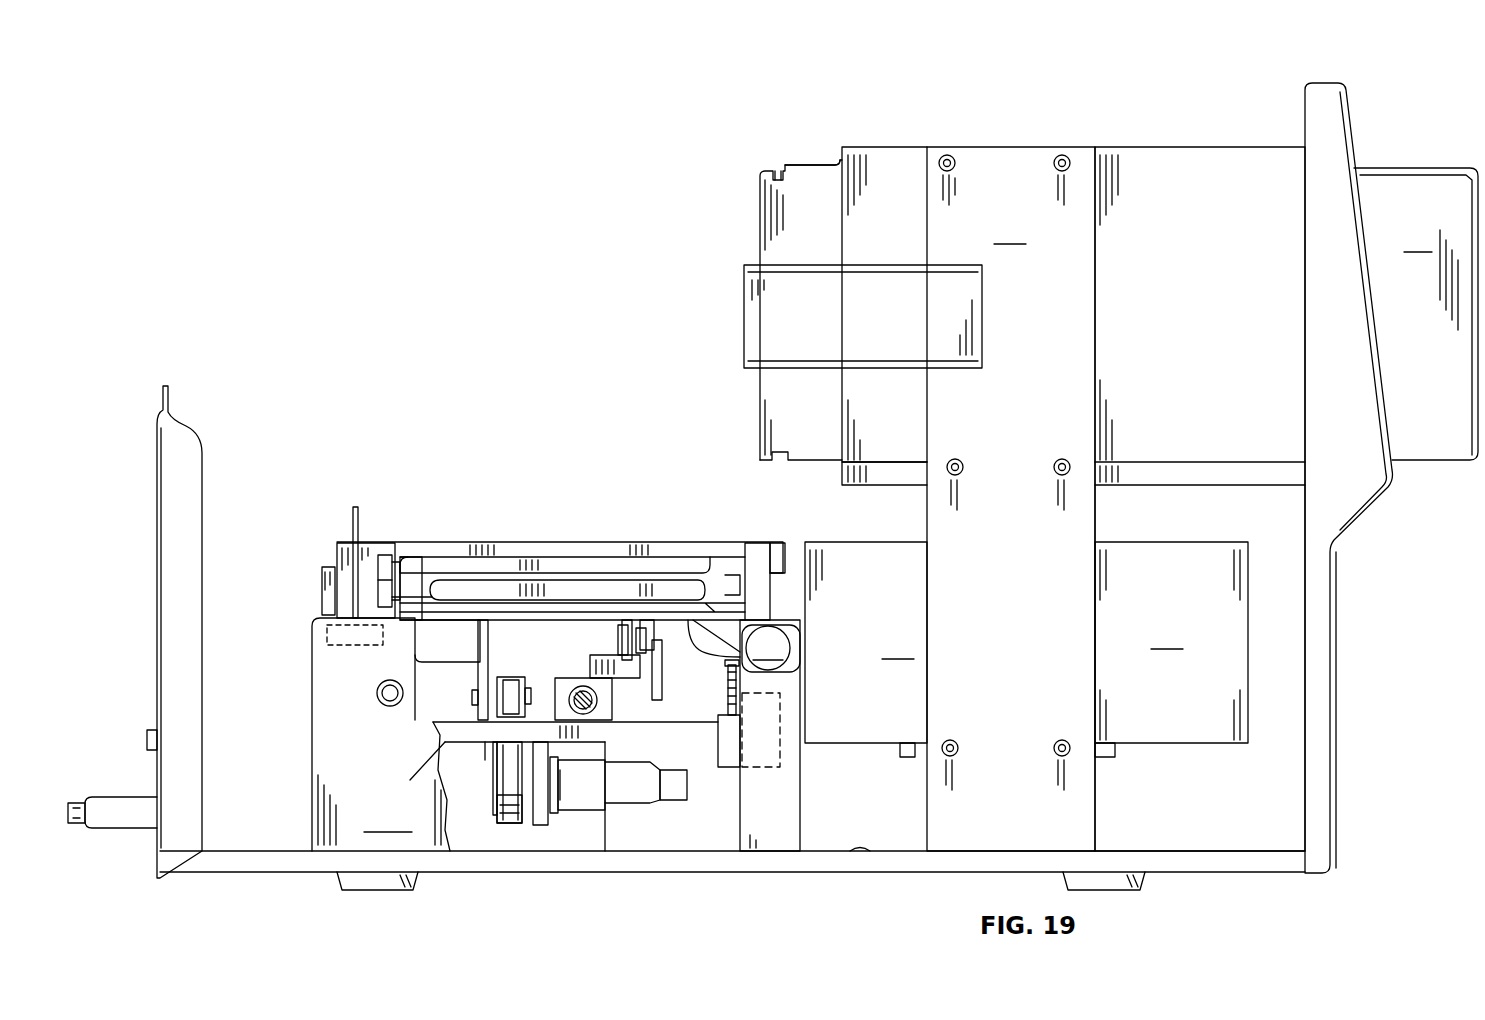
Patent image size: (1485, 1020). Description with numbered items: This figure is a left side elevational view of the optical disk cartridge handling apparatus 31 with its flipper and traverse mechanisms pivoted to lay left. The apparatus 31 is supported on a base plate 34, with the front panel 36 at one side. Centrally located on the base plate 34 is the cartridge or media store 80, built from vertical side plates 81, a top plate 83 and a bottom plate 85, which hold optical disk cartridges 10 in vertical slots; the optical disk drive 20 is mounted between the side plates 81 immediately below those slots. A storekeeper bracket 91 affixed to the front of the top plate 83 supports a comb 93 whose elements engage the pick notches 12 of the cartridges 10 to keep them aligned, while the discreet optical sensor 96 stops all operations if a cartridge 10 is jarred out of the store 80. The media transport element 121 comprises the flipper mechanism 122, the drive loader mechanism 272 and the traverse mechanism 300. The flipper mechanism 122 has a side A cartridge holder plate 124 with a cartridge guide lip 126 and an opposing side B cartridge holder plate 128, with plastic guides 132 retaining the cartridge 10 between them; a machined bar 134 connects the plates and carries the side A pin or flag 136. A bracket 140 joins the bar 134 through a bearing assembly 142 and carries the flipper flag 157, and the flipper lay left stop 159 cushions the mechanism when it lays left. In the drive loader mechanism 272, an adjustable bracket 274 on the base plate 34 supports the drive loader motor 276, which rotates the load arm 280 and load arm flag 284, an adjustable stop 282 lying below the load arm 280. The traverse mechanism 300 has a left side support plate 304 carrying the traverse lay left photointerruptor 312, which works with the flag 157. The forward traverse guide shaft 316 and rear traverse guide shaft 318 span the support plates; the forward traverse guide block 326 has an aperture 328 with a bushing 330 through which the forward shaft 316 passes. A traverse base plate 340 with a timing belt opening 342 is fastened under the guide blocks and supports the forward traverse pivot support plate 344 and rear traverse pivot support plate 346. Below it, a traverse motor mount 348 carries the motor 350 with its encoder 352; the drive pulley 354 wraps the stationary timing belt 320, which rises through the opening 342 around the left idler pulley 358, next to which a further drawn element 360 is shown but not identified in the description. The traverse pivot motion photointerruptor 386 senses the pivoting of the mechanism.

The optical disk cartridge 10 is at (770, 560).
The pick notch 12 is at (779, 168).
The optical disk drive 20 is at (1026, 649).
The optical disk cartridge handling apparatus 31 is at (1178, 133).
The base plate 34 is at (866, 851).
The front panel 36 is at (1352, 510).
The cartridge or media store 80 is at (1005, 147).
The vertical side plate 81 is at (1011, 499).
The top plate 83 is at (896, 147).
The bottom plate 85 is at (895, 478).
The storekeeper bracket 91 is at (838, 160).
The comb 93 is at (774, 166).
The discreet optical sensor 96 is at (755, 312).
The media transport element 121 is at (415, 436).
The flipper mechanism 122 is at (497, 558).
The side "A" cartridge holder plate 124 is at (578, 550).
The cartridge guide lip 126 is at (735, 556).
The side "B" cartridge holder plate 128 is at (745, 604).
The plastic guide 132 is at (620, 583).
The machined bar 134 is at (408, 572).
The side "A" pin or flag 136 is at (390, 565).
The bracket 140 is at (340, 548).
The bearing assembly 142 is at (372, 575).
The flipper flag 157 is at (355, 520).
The flipper lay left stop 159 is at (324, 614).
The drive loader mechanism 272 is at (818, 660).
The adjustable bracket 274 is at (758, 843).
The drive loader motor 276 is at (771, 648).
The load arm 280 is at (706, 656).
The adjustable stop 282 is at (728, 690).
The load arm flag 284 is at (780, 700).
The traverse mechanism 300 is at (430, 724).
The left side support plate 304 is at (388, 818).
The traverse lay left photointerruptor 312 is at (320, 638).
The forward traverse guide shaft 316 is at (612, 740).
The rear traverse guide shaft 318 is at (376, 692).
The stationary timing belt 320 is at (520, 825).
The forward traverse guide block 326 is at (612, 690).
The aperture 328 is at (583, 688).
The bushing 330 is at (590, 713).
The traverse base plate 340 is at (413, 769).
The timing belt opening 342 is at (490, 760).
The forward traverse pivot support plate 344 is at (703, 741).
The rear traverse pivot support plate 346 is at (485, 724).
The traverse motor mount 348 is at (543, 828).
The motor 350 is at (628, 800).
The encoder 352 is at (687, 782).
The drive pulley 354 is at (495, 803).
The left idler pulley 358 is at (482, 668).
The roller 360 is at (475, 700).
The traverse pivot motion photointerruptor 386 is at (612, 658).